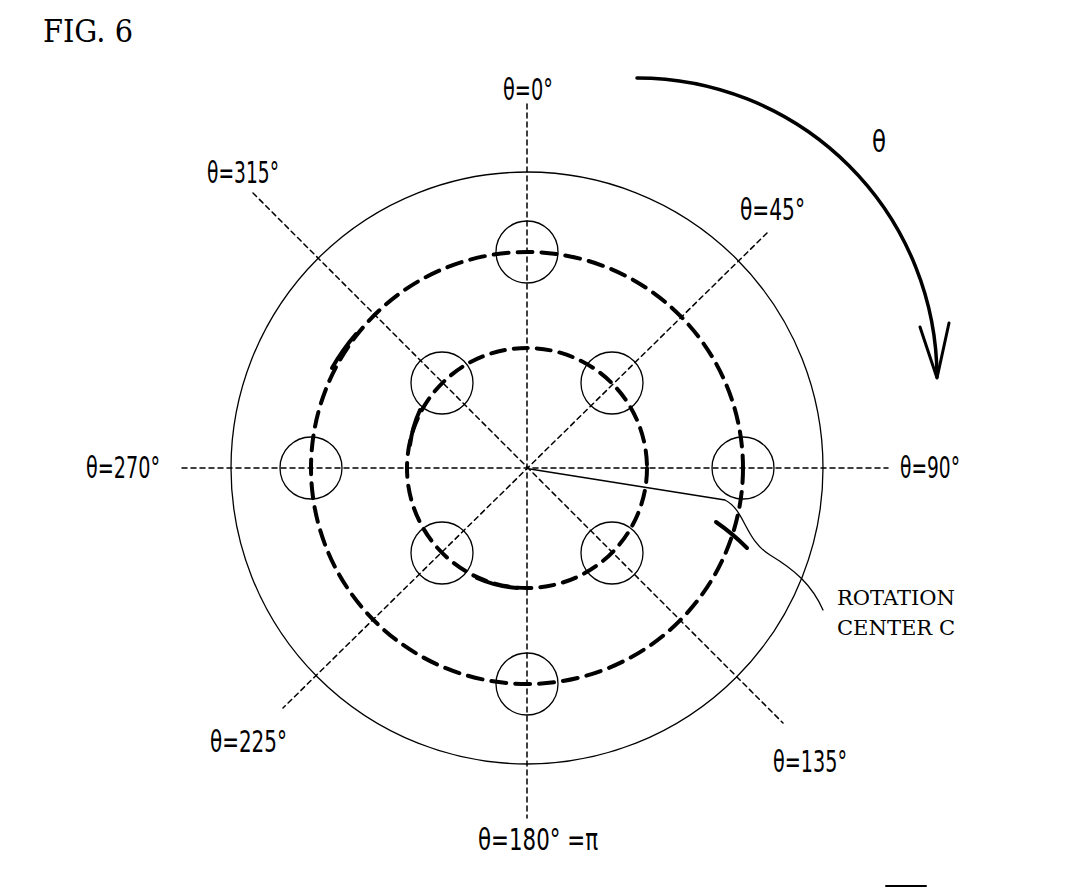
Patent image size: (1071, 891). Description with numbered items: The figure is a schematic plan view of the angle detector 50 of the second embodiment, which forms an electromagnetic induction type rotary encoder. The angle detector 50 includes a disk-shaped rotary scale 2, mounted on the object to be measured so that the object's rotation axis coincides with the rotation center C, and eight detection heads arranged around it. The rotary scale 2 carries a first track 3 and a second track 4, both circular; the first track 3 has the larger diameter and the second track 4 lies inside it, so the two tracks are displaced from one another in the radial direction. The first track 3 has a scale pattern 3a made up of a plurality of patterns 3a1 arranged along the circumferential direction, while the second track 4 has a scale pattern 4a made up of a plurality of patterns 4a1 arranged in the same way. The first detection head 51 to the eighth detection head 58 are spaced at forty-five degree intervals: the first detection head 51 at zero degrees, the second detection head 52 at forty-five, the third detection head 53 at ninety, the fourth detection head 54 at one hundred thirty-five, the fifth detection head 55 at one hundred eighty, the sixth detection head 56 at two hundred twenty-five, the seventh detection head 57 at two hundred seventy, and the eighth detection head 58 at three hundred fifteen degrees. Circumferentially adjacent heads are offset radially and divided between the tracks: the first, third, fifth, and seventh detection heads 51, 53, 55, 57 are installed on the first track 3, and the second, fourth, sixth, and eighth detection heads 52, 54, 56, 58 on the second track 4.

The rotary scale 2 is at (250, 360).
The first track 3 is at (403, 285).
The scale pattern 3a is at (737, 533).
The pattern 3a1 is at (343, 350).
The second track 4 is at (412, 507).
The scale pattern 4a is at (497, 587).
The pattern 4a1 is at (413, 427).
The angle detector 50 is at (906, 871).
The first detection head 51 is at (543, 224).
The second detection head 52 is at (617, 352).
The third detection head 53 is at (766, 445).
The fourth detection head 54 is at (628, 581).
The fifth detection head 55 is at (550, 705).
The sixth detection head 56 is at (412, 565).
The seventh detection head 57 is at (296, 495).
The eighth detection head 58 is at (453, 352).